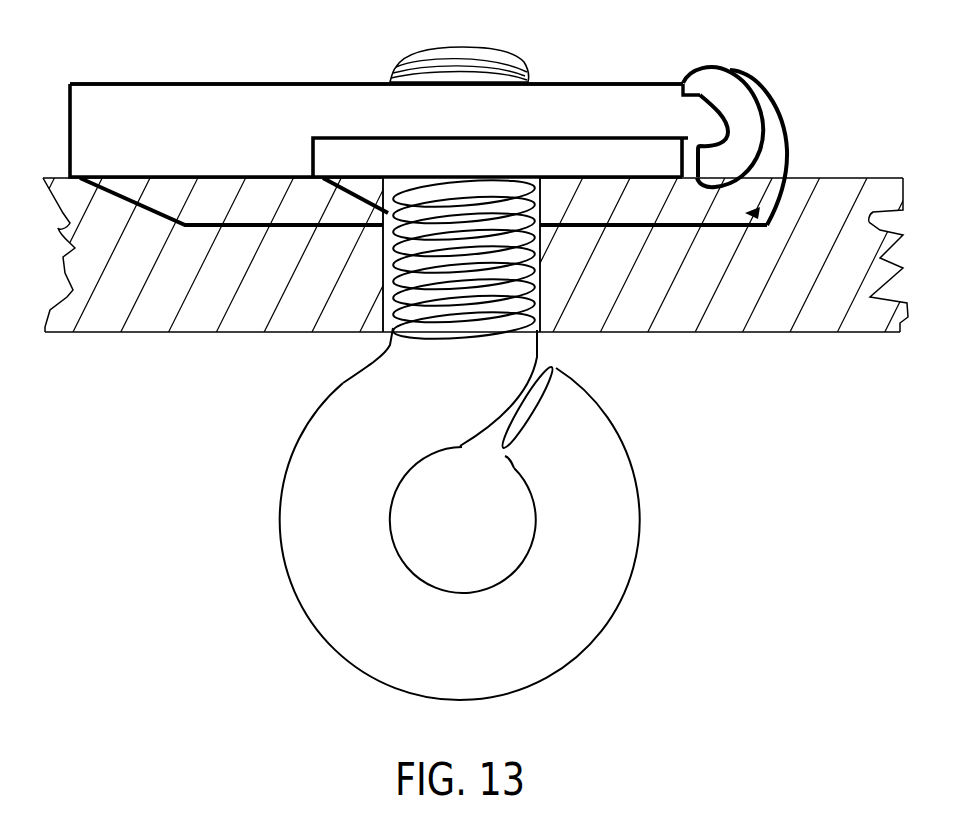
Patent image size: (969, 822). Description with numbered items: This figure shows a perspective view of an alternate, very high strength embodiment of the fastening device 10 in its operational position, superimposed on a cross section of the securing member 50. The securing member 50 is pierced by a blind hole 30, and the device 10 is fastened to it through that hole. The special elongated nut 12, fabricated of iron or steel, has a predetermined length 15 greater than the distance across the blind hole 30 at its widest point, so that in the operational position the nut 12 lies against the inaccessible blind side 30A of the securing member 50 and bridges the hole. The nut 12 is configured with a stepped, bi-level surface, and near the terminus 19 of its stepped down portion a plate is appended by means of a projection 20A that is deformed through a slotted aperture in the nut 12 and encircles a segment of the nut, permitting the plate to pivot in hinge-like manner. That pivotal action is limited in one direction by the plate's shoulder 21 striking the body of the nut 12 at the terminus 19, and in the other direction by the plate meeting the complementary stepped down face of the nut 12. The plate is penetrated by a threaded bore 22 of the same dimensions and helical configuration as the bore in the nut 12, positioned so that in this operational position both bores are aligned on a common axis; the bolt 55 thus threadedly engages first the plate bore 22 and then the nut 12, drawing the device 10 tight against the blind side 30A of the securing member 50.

The fastening device 10 is at (379, 89).
The elongated nut 12 is at (379, 99).
The length of nut 15 is at (93, 33).
The terminus of stepped down portion 19 is at (722, 90).
The projection of plate 20A is at (779, 128).
The shoulder of plate 21 is at (711, 157).
The threaded bore of plate 22 is at (547, 227).
The blind hole 30 is at (544, 200).
The blind side surface 30A is at (490, 168).
The securing member 50 is at (124, 356).
The bolt 55 is at (518, 363).